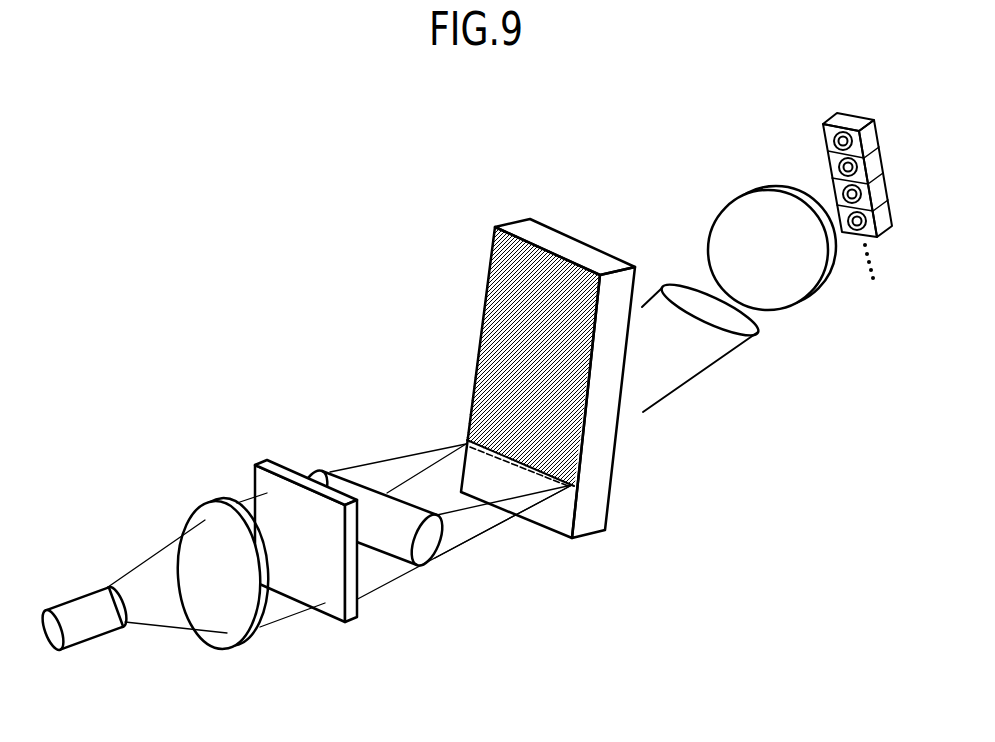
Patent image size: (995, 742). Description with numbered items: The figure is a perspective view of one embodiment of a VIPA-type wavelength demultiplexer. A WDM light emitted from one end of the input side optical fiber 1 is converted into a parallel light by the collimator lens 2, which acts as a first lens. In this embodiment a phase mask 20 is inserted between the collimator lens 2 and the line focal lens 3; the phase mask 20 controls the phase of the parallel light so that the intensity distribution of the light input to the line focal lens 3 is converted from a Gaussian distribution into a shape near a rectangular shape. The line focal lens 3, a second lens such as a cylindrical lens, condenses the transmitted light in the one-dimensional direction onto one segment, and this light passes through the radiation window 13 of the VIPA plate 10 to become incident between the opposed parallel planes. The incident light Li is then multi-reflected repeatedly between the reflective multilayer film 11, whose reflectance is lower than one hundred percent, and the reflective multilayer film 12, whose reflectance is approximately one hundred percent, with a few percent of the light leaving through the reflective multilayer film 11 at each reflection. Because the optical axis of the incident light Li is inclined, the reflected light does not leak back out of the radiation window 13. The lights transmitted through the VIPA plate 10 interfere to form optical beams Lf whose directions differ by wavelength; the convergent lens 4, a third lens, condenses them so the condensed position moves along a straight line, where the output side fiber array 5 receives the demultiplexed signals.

The input side optical fiber 1 is at (92, 637).
The collimator lens 2 is at (253, 637).
The line focal lens 3 is at (437, 567).
The convergent lens 4 is at (818, 290).
The fiber array 5 is at (822, 158).
The VIPA plate 10 is at (566, 371).
The reflective multilayer film 11 is at (500, 250).
The reflective multilayer film 12 is at (553, 227).
The radiation window 13 is at (547, 513).
The phase mask 20 is at (350, 605).
The incident light Li is at (463, 446).
The optical beams Lf is at (698, 368).